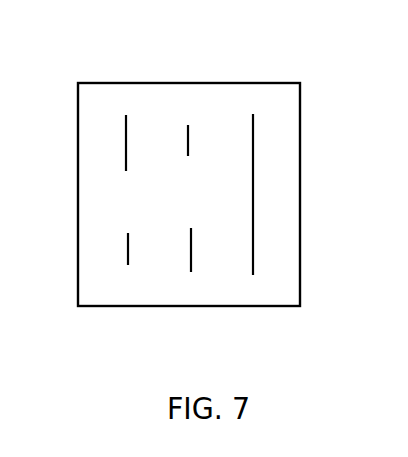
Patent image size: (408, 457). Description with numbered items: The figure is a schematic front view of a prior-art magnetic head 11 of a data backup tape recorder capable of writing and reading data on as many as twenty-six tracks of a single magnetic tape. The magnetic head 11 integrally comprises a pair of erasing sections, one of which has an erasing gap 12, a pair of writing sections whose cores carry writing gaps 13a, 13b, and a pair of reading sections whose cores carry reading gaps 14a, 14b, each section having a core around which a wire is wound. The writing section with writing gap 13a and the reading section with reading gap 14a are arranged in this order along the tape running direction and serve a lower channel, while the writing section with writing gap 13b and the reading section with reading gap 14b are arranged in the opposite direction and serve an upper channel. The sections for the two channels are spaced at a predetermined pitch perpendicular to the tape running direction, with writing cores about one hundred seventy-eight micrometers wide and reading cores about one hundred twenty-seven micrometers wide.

The magnetic head 11 is at (287, 93).
The erasing gap 12 is at (253, 250).
The writing gap 13a is at (191, 252).
The writing gap 13b is at (127, 132).
The reading gap 14a is at (128, 255).
The reading gap 14b is at (188, 138).